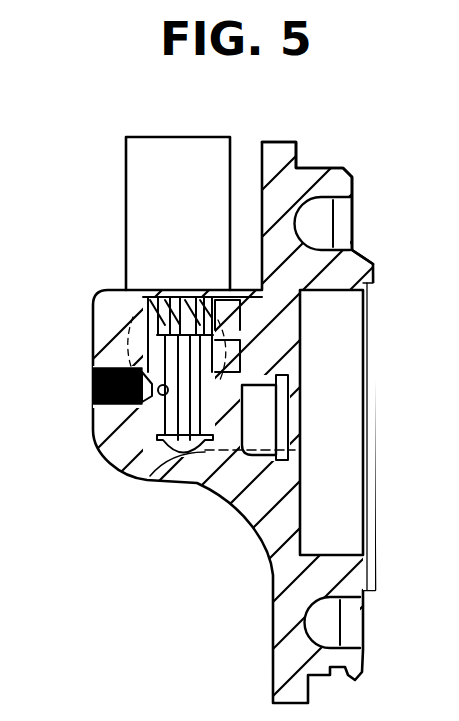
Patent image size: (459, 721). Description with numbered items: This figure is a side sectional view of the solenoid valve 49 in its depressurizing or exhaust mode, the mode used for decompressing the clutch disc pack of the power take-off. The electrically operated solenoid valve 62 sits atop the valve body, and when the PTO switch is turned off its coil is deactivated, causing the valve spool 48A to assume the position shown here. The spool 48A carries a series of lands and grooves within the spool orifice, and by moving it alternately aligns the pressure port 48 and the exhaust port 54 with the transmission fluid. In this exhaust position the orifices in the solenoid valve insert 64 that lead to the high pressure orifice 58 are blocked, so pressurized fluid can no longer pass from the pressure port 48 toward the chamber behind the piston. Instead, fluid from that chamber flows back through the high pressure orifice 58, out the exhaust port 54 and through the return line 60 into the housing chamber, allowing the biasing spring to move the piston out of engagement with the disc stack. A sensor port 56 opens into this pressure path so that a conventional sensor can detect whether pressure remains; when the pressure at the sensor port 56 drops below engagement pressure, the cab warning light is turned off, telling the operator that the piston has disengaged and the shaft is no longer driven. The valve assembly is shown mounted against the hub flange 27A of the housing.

The hub flange 27A is at (297, 168).
The pressure port 48 is at (170, 290).
The valve spool 48A is at (277, 312).
The solenoid valve 49 is at (118, 274).
The exhaust port 54 is at (152, 478).
The sensor port 56 is at (93, 393).
The high pressure orifice 58 is at (247, 378).
The return line 60 is at (198, 486).
The solenoid valve 62 is at (214, 188).
The solenoid valve insert 64 is at (232, 313).